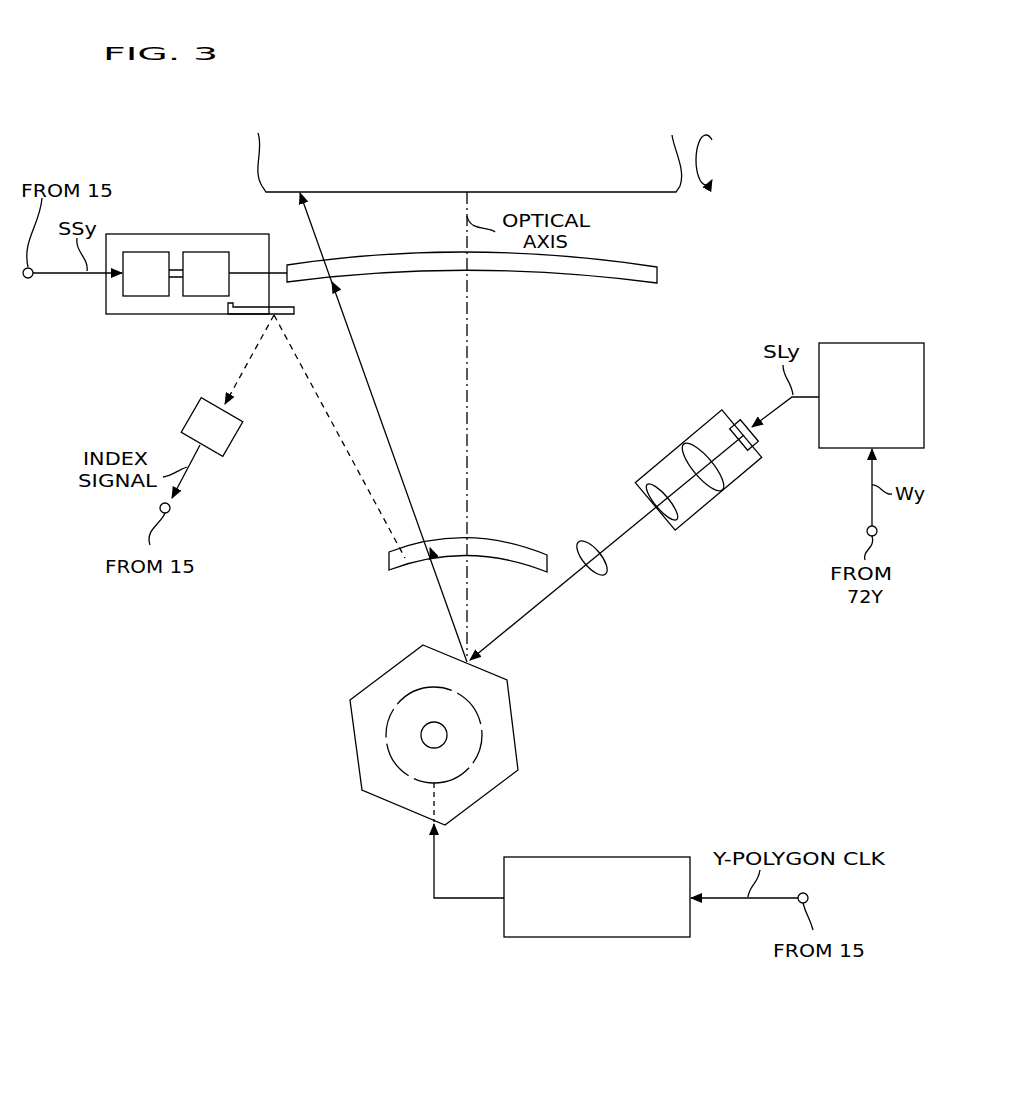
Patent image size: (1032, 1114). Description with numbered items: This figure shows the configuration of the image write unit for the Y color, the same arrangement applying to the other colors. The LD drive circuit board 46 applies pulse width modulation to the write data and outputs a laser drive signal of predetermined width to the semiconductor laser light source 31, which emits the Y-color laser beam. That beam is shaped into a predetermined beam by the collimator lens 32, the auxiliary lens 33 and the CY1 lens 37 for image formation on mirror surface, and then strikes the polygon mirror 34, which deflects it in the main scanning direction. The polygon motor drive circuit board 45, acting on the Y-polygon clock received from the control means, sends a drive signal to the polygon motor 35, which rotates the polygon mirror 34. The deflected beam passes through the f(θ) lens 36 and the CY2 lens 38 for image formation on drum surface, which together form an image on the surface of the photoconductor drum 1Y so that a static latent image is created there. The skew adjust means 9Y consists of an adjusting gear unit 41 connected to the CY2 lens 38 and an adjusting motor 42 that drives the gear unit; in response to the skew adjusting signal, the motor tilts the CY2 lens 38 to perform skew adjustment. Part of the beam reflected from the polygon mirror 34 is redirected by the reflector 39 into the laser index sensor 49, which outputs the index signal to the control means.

The photoconductor drum 1Y is at (638, 193).
The skew adjust means 9Y is at (96, 302).
The adjusting motor 42 is at (147, 251).
The adjusting gear unit 41 is at (207, 251).
The reflector 39 is at (248, 317).
The laser index sensor 49 is at (230, 447).
The CY2 lens for image formation on drum surface 38 is at (657, 275).
The f(θ) lens 36 is at (532, 547).
The CY1 lens for image formation on mirror surface 37 is at (607, 573).
The collimator lens 32 is at (730, 487).
The auxiliary lens 33 is at (677, 528).
The semiconductor laser light source 31 is at (738, 418).
The LD drive circuit board 46 is at (874, 342).
The polygon mirror 34 is at (517, 725).
The polygon motor 35 is at (387, 742).
The polygon motor drive circuit board 45 is at (635, 857).